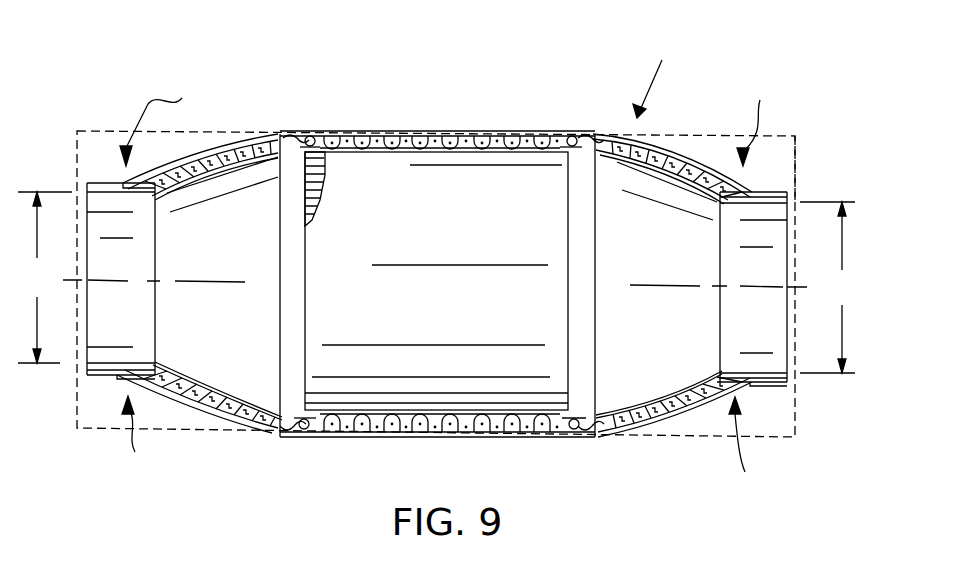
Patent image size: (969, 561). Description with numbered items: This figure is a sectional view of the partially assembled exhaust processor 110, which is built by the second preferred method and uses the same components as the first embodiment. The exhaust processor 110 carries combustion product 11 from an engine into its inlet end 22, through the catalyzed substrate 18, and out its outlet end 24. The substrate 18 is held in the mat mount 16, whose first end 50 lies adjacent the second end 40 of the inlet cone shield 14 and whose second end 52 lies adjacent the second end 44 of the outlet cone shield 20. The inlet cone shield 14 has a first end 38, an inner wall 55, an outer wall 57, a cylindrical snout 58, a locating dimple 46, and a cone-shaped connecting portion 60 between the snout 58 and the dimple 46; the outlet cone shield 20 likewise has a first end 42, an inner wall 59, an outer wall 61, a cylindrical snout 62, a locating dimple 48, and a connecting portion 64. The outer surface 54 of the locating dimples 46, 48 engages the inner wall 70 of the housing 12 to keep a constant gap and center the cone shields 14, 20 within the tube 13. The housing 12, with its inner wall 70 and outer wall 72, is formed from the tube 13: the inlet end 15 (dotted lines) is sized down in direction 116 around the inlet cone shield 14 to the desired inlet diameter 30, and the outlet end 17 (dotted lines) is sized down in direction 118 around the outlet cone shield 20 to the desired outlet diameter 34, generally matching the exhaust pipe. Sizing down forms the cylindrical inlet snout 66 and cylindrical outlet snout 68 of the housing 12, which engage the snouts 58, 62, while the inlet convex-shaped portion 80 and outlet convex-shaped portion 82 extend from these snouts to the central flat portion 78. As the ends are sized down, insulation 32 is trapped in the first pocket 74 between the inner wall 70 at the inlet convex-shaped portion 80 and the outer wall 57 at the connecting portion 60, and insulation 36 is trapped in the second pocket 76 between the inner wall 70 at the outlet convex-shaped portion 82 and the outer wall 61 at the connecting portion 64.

The combustion product 11 is at (163, 124).
The housing 12 is at (322, 136).
The tube 13 is at (217, 130).
The inlet cone shield 14 is at (190, 378).
The inlet end of tube 15 is at (90, 130).
The mat mount 16 is at (440, 136).
The outlet end of tube 17 is at (773, 134).
The catalyzed substrate 18 is at (373, 224).
The outlet cone shield 20 is at (652, 192).
The inlet end of exhaust processor 22 is at (93, 378).
The outlet end of exhaust processor 24 is at (773, 190).
The inlet diameter 30 is at (45, 277).
The insulation 32 is at (246, 137).
The outlet diameter 34 is at (827, 287).
The insulation 36 is at (647, 402).
The first end of inlet cone shield 38 is at (110, 225).
The second end of inlet cone shield 40 is at (290, 434).
The first end of outlet cone shield 42 is at (767, 354).
The second end of outlet cone shield 44 is at (585, 436).
The locating dimple 46 is at (291, 131).
The locating dimple 48 is at (572, 137).
The first end of mat mount 50 is at (320, 132).
The second end of mat mount 52 is at (543, 437).
The outer surface of locating dimple 54 is at (590, 140).
The inner wall of inlet cone shield 55 is at (222, 396).
The outer wall of inlet cone shield 57 is at (209, 165).
The cylindrical snout of inlet cone shield 58 is at (139, 198).
The inner wall of outlet cone shield 59 is at (678, 392).
The connecting portion of inlet cone shield 60 is at (248, 162).
The outer wall of outlet cone shield 61 is at (690, 184).
The cylindrical snout of outlet cone shield 62 is at (753, 195).
The connecting portion of outlet cone shield 64 is at (618, 410).
The cylindrical inlet snout of housing 66 is at (97, 182).
The cylindrical outlet snout of housing 68 is at (768, 386).
The inner wall of housing 70 is at (503, 137).
The outer wall of housing 72 is at (450, 438).
The first pocket 74 is at (190, 148).
The second pocket 76 is at (667, 158).
The central flat portion of housing 78 is at (404, 131).
The inlet convex-shaped portion of housing 80 is at (182, 413).
The outlet convex-shaped portion of housing 82 is at (697, 416).
The exhaust processor 110 is at (669, 121).
The direction 116 is at (122, 441).
The direction 118 is at (755, 284).